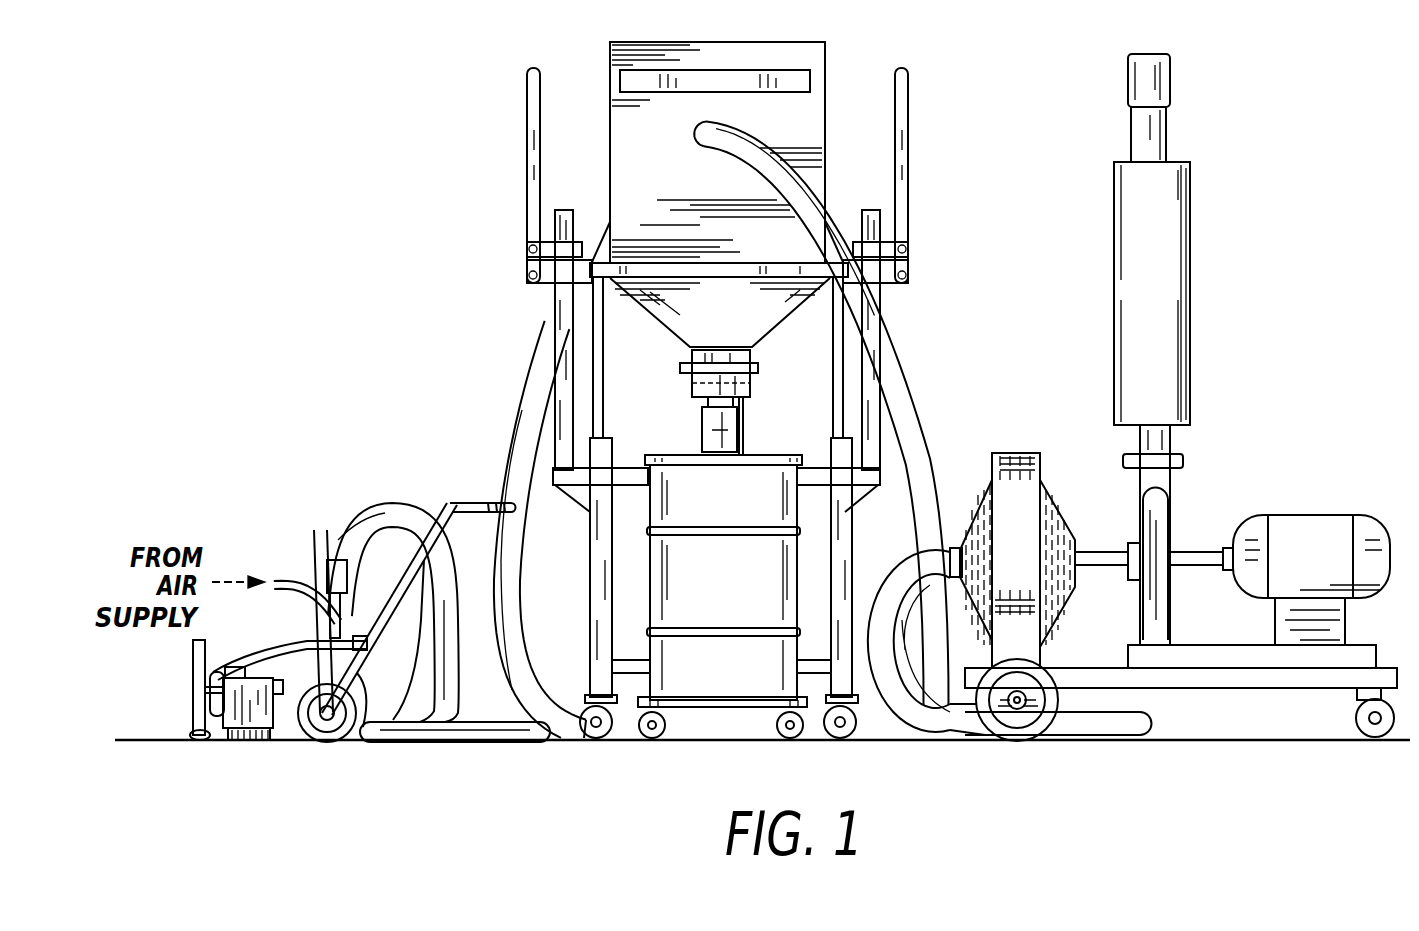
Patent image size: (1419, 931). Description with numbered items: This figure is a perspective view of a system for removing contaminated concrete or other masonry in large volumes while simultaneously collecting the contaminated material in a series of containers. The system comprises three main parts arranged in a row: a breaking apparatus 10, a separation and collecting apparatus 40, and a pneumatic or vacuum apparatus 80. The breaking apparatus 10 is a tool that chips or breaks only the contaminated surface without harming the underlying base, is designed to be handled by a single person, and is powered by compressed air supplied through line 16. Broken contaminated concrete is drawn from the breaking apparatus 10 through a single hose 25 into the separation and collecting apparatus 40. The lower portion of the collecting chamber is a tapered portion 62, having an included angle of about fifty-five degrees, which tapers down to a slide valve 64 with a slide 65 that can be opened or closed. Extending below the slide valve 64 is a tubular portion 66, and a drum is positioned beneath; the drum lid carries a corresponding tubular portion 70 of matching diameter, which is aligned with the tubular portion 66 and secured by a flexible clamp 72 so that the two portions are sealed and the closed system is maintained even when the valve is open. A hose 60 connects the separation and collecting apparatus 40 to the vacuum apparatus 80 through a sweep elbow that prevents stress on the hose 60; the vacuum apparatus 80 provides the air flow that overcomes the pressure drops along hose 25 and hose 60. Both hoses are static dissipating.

The breaking apparatus 10 is at (282, 530).
The line 16 is at (300, 598).
The hose 25 is at (522, 406).
The separation and collecting apparatus 40 is at (608, 48).
The hose 60 is at (908, 377).
The tapered portion 62 is at (762, 315).
The slide valve 64 is at (692, 382).
The slide 65 is at (758, 382).
The tubular portion 66 is at (738, 402).
The tubular portion 70 is at (750, 436).
The flexible clamp 72 is at (702, 418).
The vacuum apparatus 80 is at (1231, 379).